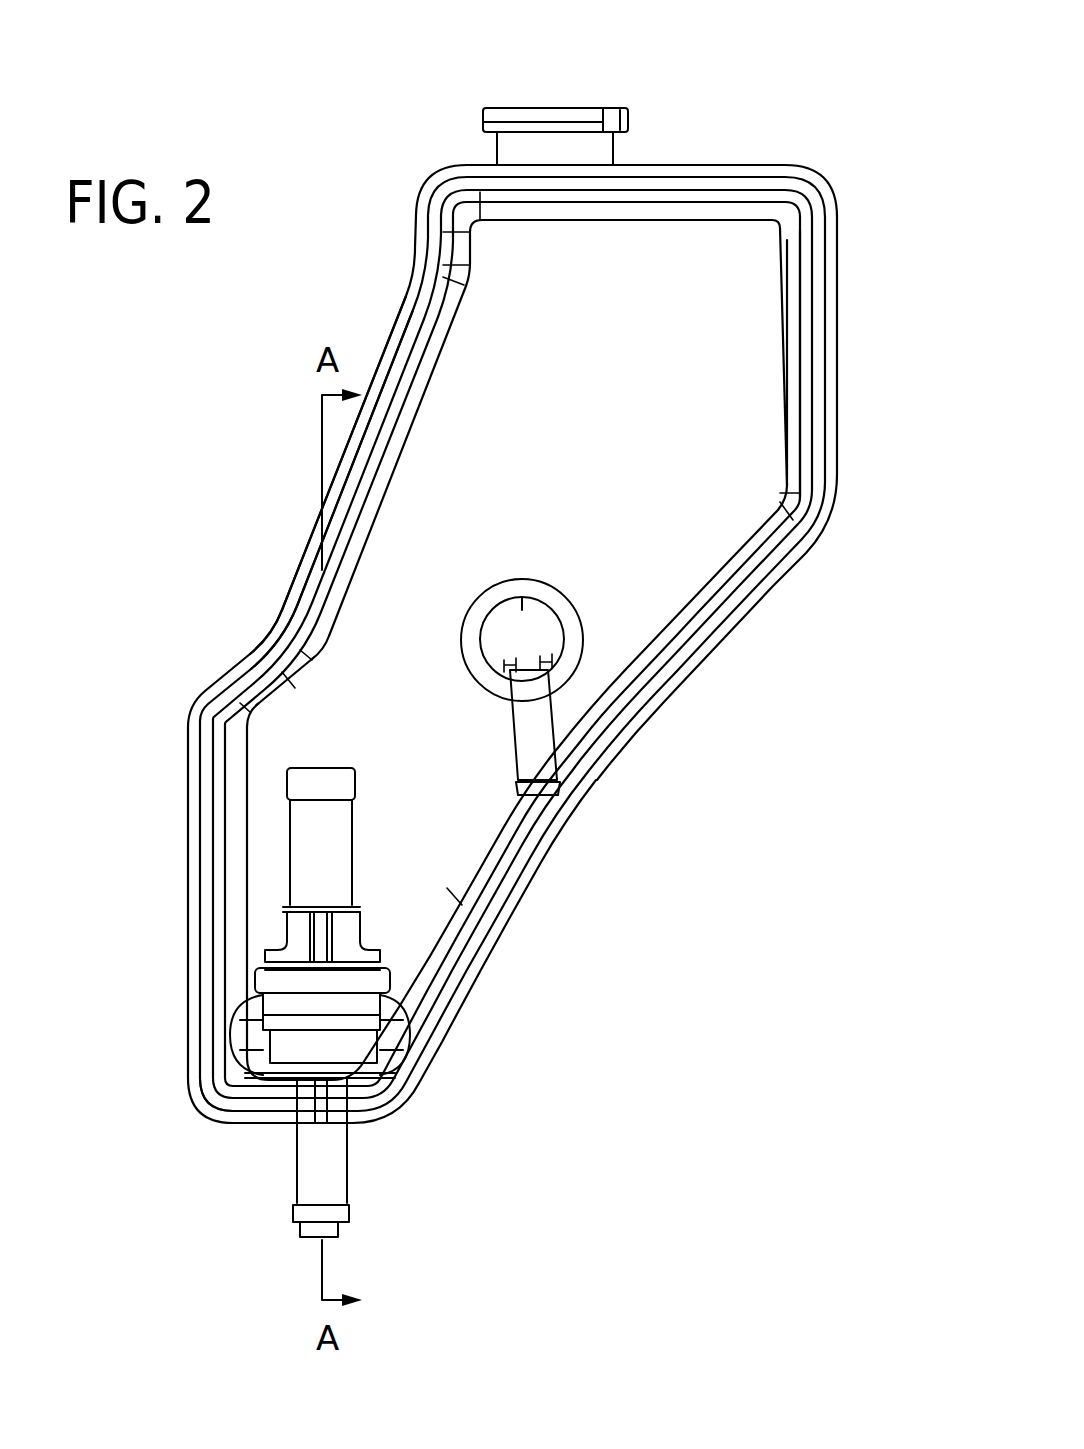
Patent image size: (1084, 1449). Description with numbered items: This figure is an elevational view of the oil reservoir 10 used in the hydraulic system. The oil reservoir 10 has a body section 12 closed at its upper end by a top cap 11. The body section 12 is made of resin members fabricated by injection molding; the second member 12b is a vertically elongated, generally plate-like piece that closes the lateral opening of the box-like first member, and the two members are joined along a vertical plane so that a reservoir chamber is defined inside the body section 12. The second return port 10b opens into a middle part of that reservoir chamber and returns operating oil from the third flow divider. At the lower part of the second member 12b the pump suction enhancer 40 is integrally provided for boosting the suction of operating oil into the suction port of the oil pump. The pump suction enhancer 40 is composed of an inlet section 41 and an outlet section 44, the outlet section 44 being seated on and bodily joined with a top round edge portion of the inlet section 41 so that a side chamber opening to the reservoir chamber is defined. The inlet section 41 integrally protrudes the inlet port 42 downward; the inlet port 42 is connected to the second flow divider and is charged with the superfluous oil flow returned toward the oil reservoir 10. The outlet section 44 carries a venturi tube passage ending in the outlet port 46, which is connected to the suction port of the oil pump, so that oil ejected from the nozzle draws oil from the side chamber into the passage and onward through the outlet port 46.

The oil reservoir 10 is at (815, 148).
The top cap 11 is at (538, 118).
The body section 12 is at (293, 575).
The second member 12b is at (722, 445).
The second return port 10b is at (532, 762).
The pump suction enhancer 40 is at (347, 1052).
The inlet section 41 is at (240, 1124).
The inlet port 42 is at (328, 1212).
The outlet section 44 is at (308, 890).
The outlet port 46 is at (298, 792).